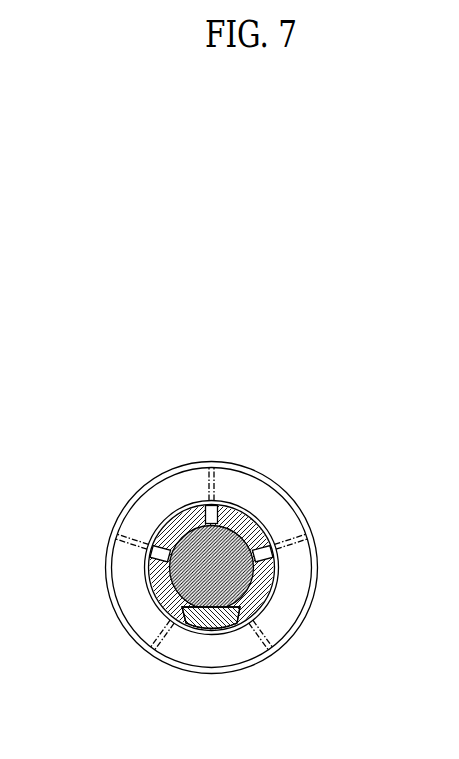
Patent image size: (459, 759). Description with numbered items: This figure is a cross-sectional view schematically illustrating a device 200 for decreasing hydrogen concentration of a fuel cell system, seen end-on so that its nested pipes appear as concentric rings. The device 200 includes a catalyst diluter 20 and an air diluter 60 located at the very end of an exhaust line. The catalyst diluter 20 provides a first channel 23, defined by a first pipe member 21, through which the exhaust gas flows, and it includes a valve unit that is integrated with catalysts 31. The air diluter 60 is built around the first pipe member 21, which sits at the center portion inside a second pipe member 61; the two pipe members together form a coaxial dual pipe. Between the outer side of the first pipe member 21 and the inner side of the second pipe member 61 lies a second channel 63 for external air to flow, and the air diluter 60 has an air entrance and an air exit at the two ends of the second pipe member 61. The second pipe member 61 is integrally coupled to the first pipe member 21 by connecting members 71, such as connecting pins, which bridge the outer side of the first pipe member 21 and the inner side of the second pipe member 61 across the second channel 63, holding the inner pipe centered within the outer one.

The device for decreasing hydrogen concentration 200 is at (112, 378).
The air diluter 60 is at (93, 586).
The second pipe member 61 is at (108, 552).
The second channel 63 is at (147, 498).
The connecting member 71 is at (209, 500).
The catalyst diluter 20 is at (386, 530).
The first pipe member 21 is at (222, 553).
The first channel 23 is at (207, 593).
The catalysts 31 is at (235, 501).